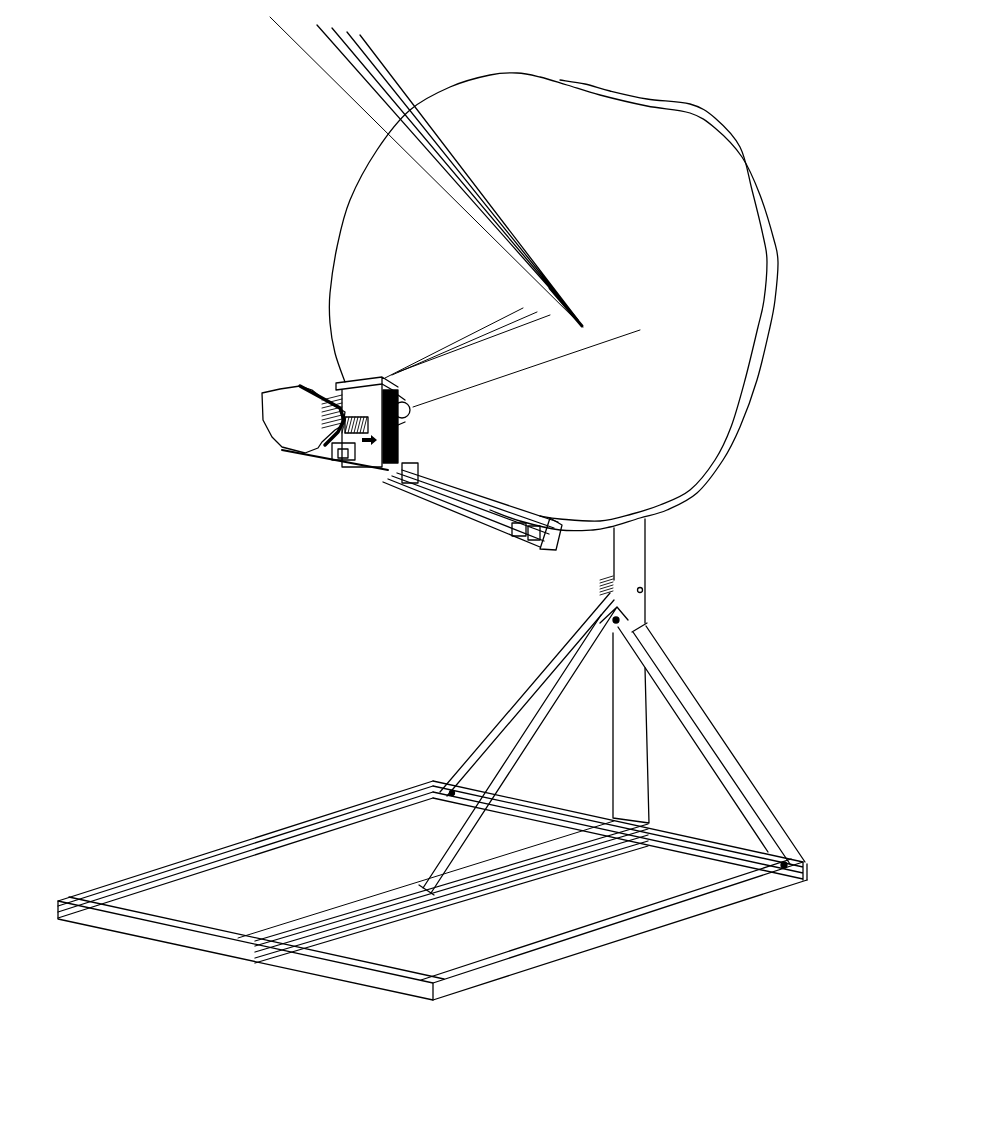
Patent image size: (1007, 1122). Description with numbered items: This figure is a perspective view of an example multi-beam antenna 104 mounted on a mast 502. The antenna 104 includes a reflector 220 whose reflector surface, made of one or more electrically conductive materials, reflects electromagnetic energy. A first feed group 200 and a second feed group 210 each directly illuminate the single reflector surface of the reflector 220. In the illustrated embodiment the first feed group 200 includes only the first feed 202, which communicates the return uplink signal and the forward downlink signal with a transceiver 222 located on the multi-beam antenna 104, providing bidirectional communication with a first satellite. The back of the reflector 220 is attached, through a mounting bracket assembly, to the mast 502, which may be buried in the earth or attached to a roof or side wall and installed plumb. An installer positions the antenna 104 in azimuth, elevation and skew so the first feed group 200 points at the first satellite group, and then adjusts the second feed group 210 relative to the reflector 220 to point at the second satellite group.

The multi-beam antenna 104 is at (135, 70).
The reflector 220 is at (720, 250).
The first feed group 200 is at (415, 392).
The second feed group 210 is at (302, 370).
The transceiver 222 is at (362, 455).
The first feed 202 is at (412, 419).
The mast 502 is at (625, 562).